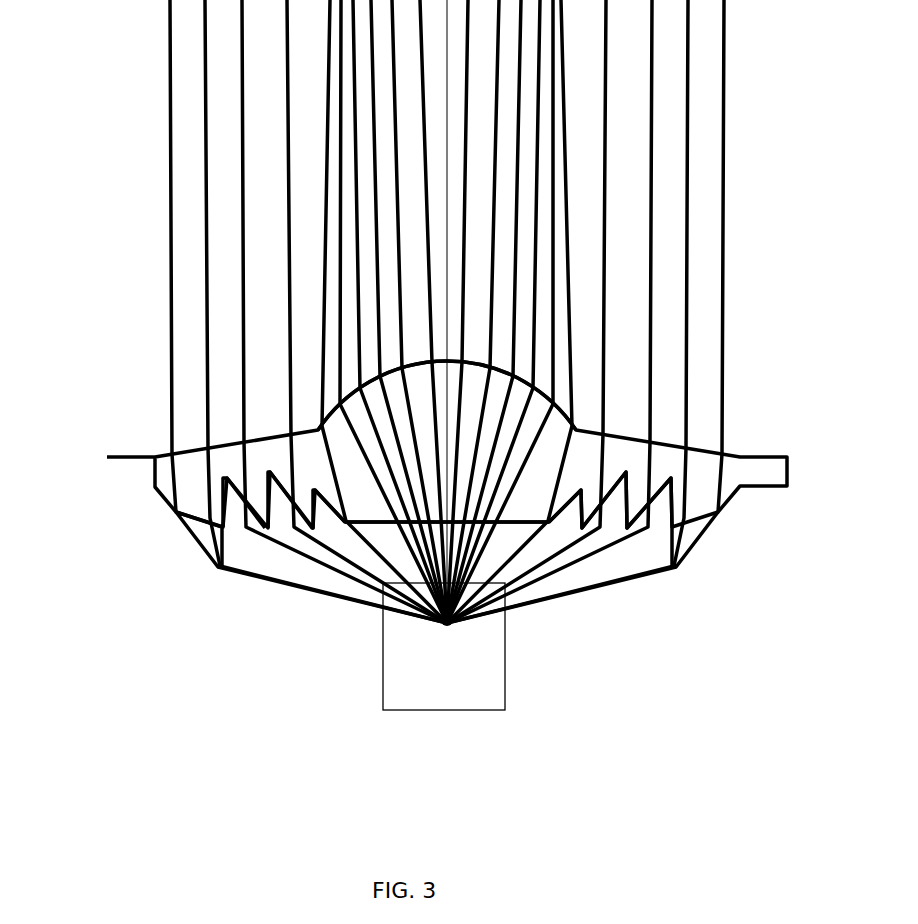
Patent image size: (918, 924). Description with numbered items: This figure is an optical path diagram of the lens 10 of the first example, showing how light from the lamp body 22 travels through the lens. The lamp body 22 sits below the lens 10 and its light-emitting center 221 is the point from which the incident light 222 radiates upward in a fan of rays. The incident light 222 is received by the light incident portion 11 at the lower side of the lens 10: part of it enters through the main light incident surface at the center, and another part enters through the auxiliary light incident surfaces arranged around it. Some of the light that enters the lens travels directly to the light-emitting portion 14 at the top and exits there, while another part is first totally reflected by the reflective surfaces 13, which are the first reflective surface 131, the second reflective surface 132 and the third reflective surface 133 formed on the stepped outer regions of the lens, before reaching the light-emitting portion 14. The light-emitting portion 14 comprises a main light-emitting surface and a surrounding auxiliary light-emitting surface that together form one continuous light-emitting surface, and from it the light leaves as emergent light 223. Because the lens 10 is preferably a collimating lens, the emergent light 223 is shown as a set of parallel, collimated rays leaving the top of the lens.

The lens 10 is at (467, 436).
The light incident portion 11 is at (367, 527).
The reflective surface 13 is at (378, 610).
The first reflective surface 131 is at (227, 607).
The second reflective surface 132 is at (220, 563).
The third reflective surface 133 is at (190, 527).
The light-emitting portion 14 is at (500, 370).
The lamp body 22 is at (455, 630).
The light-emitting center 221 is at (447, 623).
The incident light 222 is at (610, 580).
The emergent light 223 is at (725, 145).